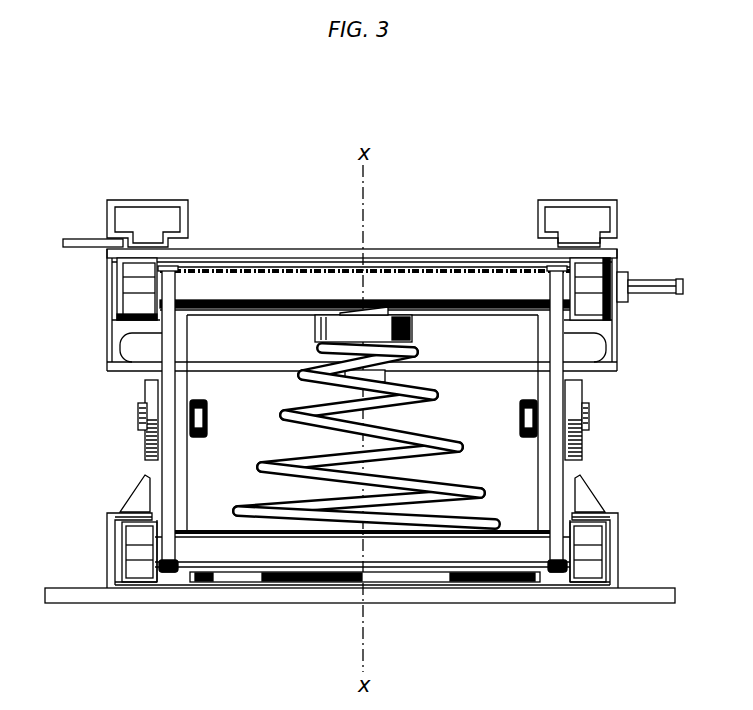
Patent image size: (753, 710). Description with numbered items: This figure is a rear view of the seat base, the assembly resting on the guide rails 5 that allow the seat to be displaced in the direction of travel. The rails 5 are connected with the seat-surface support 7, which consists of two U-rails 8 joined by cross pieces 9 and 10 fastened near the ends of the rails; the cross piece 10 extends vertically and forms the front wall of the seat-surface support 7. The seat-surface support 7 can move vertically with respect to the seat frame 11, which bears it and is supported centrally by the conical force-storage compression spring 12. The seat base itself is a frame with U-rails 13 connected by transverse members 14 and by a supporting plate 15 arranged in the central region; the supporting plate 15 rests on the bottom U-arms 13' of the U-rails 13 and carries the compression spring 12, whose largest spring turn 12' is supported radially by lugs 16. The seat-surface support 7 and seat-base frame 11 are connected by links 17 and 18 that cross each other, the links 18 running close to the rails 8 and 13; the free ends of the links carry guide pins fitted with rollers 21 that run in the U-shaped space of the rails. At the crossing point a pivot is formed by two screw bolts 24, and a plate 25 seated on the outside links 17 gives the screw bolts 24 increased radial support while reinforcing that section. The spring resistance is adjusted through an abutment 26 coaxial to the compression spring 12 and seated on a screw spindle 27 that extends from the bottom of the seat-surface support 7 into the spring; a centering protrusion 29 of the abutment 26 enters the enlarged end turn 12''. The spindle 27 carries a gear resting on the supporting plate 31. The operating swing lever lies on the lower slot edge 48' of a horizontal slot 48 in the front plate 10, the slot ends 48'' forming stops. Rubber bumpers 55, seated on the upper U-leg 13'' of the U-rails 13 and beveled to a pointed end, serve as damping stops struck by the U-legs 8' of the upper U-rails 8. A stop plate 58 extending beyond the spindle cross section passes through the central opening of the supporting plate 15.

The guide rails 5 is at (150, 203).
The rollers 21 is at (137, 277).
The supporting plate 31 is at (215, 262).
The end turn 12'' is at (190, 259).
The cross piece 10 is at (300, 262).
The screw spindle 27 is at (355, 306).
The cross piece 9 is at (405, 255).
The abutment 26 is at (385, 328).
The slot 48 is at (362, 271).
The seat-surface support 7 is at (625, 257).
The U-rails 8 is at (370, 300).
The U-legs 8' is at (102, 307).
The slot ends 48'' is at (372, 348).
The screw bolts 24 is at (140, 412).
The links 17 is at (167, 439).
The rubber bumpers 55 is at (140, 495).
The upper U-leg 13'' is at (96, 498).
The U-rails 13 is at (367, 550).
The transverse members 14 is at (78, 597).
The bottom U-arms 13' is at (362, 637).
The supporting plate 15 is at (195, 585).
The lugs 16 is at (242, 578).
The stop plate 58 is at (344, 372).
The largest spring turn 12' is at (365, 632).
The seat frame 11 is at (625, 535).
The plate 25 is at (575, 392).
The conical force-storage compression spring 12 is at (441, 418).
The centering protrusion 29 is at (418, 368).
The links 18 is at (180, 480).
The lower slot edge 48' is at (244, 397).